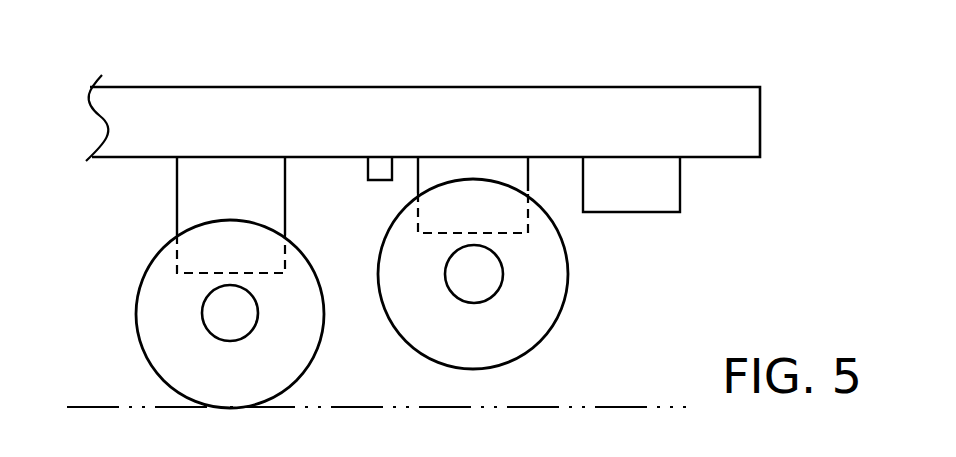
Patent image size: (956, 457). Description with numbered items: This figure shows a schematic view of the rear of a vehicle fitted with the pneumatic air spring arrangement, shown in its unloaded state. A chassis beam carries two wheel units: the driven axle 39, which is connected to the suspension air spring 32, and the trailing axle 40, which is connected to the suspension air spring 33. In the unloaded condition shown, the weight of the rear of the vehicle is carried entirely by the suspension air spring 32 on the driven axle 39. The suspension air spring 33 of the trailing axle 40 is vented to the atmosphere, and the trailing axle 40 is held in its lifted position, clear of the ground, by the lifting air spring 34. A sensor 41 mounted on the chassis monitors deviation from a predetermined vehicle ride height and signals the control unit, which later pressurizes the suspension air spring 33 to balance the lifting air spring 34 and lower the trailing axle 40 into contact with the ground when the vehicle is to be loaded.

The suspension air spring 32 is at (230, 170).
The suspension air spring 33 is at (492, 167).
The lifting air spring 34 is at (623, 167).
The driven axle 39 is at (215, 316).
The trailing axle 40 is at (490, 282).
The sensor 41 is at (378, 165).